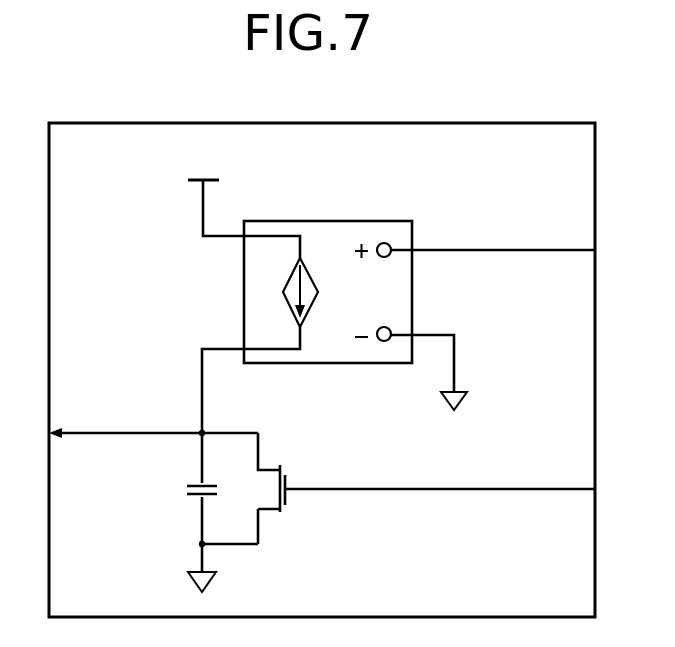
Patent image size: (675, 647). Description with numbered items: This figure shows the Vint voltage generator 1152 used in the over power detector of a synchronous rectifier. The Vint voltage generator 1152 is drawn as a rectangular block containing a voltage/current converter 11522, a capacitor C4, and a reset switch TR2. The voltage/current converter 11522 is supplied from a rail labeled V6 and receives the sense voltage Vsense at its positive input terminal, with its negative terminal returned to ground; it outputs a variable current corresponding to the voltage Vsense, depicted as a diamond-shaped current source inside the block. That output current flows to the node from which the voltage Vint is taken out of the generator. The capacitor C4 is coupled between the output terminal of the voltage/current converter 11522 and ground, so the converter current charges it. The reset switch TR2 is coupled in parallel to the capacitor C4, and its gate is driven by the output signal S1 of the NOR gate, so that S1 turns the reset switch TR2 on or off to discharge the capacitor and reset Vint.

The Vint voltage generator 1152 is at (467, 123).
The voltage/current converter 11522 is at (390, 220).
The supply voltage V6 is at (244, 205).
The integrated voltage output Vint is at (142, 420).
The capacitor C4 is at (184, 490).
The reset switch TR2 is at (293, 488).
The output signal S1 is at (562, 476).
The sense voltage Vsense is at (562, 237).